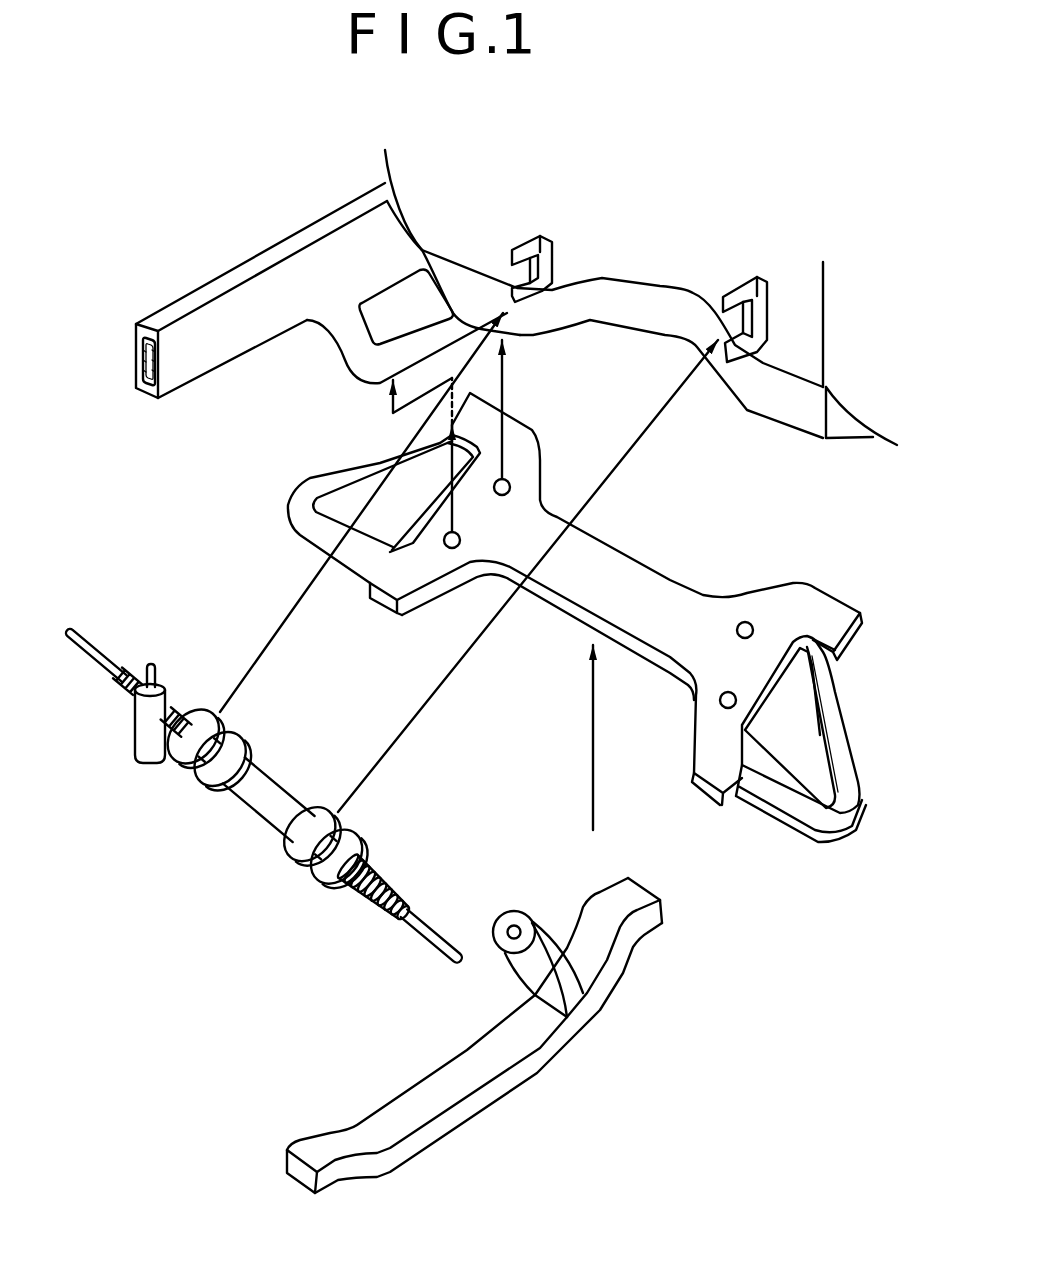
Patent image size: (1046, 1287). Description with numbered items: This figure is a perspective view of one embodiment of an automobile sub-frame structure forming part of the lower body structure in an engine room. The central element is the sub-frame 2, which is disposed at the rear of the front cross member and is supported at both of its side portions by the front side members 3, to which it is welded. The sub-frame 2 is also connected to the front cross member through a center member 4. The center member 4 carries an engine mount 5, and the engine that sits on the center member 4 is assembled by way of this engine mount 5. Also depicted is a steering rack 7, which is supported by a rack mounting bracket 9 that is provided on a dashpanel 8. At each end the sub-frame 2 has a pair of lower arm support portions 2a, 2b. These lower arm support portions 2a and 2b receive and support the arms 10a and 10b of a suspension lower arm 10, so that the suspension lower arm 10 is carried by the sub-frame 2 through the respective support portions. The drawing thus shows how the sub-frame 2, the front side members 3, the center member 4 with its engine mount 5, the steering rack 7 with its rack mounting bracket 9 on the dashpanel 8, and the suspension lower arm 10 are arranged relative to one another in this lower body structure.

The sub-frame 2 is at (646, 641).
The lower arm support portion 2a is at (702, 787).
The lower arm support portion 2b is at (838, 627).
The front side member 3 is at (203, 333).
The center member 4 is at (445, 1087).
The engine mount 5 is at (515, 912).
The steering rack 7 is at (270, 795).
The dashpanel 8 is at (812, 313).
The rack mounting bracket 9 is at (547, 270).
The suspension lower arm 10 is at (568, 670).
The arm of suspension lower arm 10a is at (758, 782).
The arm of suspension lower arm 10b is at (820, 670).